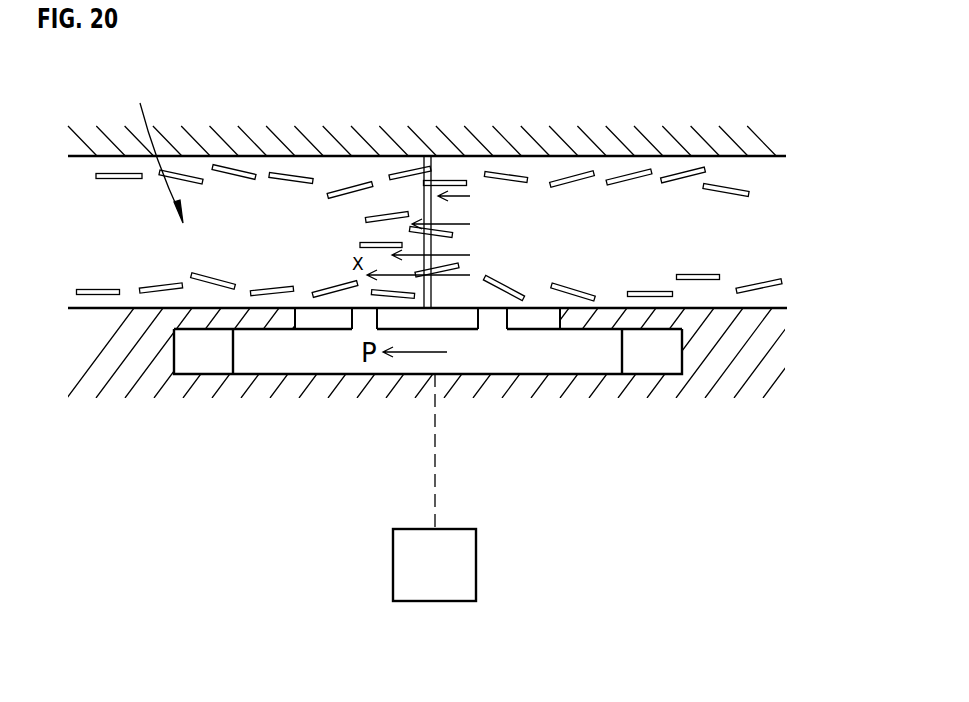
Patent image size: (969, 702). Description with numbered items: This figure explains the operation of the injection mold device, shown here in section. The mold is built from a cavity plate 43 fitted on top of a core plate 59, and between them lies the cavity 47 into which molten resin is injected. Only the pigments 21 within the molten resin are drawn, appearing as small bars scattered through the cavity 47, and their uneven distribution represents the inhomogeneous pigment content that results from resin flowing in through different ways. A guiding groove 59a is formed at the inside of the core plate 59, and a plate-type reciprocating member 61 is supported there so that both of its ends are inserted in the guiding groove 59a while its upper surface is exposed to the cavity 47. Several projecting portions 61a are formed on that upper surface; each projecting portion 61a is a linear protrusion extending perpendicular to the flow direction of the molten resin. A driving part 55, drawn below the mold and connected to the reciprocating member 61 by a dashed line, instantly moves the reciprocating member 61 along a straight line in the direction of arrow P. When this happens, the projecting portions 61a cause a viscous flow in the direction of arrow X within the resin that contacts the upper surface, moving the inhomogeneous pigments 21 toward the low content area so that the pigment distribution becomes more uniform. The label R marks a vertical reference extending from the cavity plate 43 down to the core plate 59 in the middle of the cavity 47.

The pigments 21 is at (241, 175).
The cavity plate 43 is at (590, 142).
The cavity 47 is at (151, 147).
The driving part 55 is at (465, 565).
The core plate 59 is at (748, 352).
The guiding groove 59a is at (653, 362).
The reciprocating member 61 is at (268, 358).
The projecting portion 61a is at (495, 315).
The rotation axis direction R is at (424, 156).